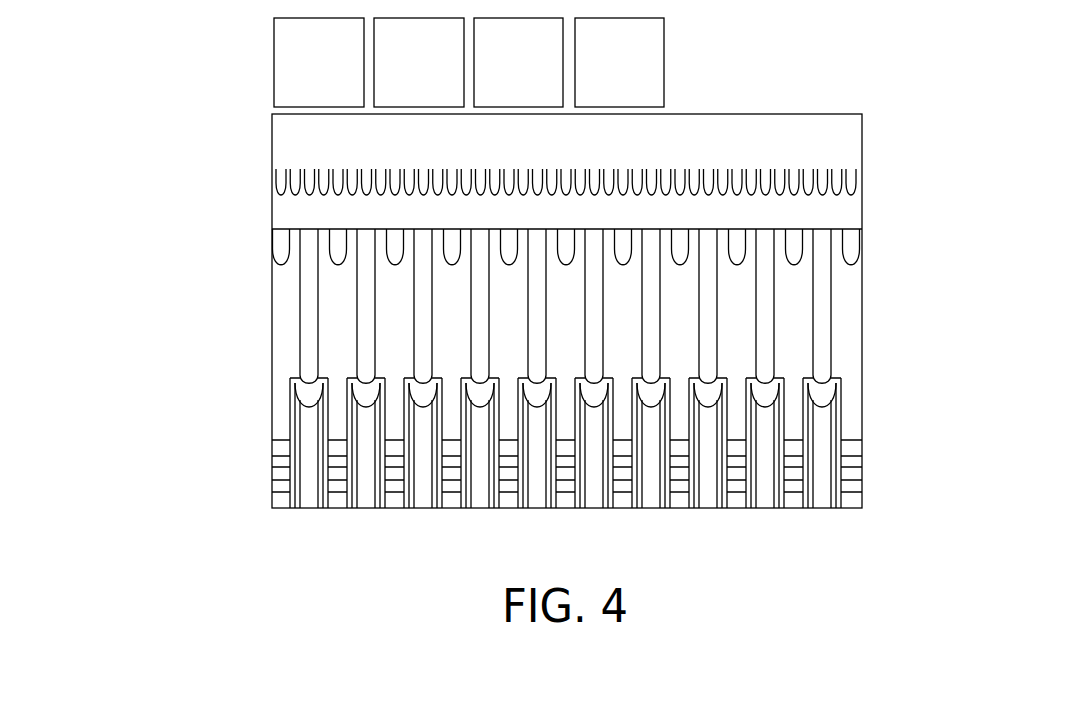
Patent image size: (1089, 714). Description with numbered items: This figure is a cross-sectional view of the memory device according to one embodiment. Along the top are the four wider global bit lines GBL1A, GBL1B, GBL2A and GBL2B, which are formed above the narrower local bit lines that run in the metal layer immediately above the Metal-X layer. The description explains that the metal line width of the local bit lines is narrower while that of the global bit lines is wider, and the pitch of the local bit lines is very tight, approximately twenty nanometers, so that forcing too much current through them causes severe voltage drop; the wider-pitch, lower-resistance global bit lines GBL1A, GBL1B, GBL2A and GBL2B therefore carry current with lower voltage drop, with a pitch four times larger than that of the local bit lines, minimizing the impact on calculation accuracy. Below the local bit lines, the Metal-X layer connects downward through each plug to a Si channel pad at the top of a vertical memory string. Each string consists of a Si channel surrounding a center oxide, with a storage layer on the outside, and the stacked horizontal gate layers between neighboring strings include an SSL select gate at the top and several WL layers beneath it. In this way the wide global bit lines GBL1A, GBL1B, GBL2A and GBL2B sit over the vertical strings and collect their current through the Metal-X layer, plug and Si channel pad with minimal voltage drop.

The global bit line GBL1A is at (319, 62).
The global bit line GBL1B is at (419, 62).
The global bit line GBL2A is at (518, 62).
The global bit line GBL2B is at (619, 62).
The Metal-X layer Metal-X is at (282, 243).
The element plug is at (308, 313).
The element Si channel pad is at (298, 391).
The element storage layer is at (843, 410).
The element Si channel is at (297, 473).
The element center oxide is at (312, 500).
The element SSL select gate is at (853, 448).
The word line WL is at (853, 473).